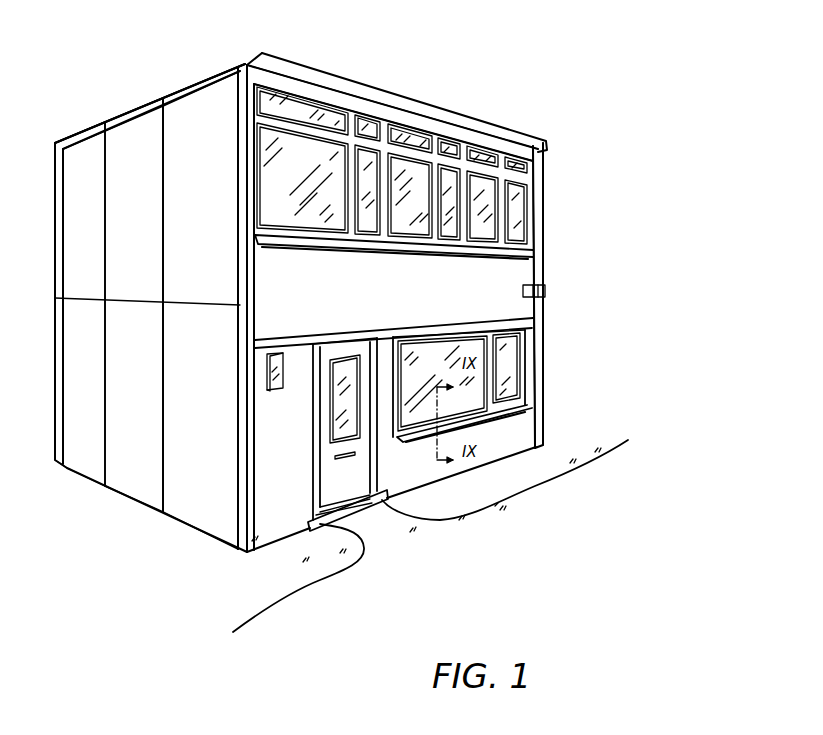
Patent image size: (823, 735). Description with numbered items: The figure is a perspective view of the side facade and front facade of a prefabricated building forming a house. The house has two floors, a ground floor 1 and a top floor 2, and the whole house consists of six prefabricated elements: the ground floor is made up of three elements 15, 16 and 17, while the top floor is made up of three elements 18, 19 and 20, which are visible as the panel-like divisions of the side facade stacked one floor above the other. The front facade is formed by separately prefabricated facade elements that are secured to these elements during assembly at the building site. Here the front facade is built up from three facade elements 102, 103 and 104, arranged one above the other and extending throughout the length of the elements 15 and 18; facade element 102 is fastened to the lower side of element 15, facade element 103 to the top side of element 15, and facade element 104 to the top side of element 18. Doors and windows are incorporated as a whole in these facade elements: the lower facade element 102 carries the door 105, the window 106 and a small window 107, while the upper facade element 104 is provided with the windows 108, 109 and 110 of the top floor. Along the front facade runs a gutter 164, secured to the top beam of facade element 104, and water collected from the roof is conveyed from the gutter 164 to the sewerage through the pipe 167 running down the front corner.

The floor 1 is at (350, 516).
The floor 2 is at (222, 68).
The element 15 is at (213, 538).
The element 16 is at (147, 505).
The element 17 is at (83, 476).
The element 18 is at (178, 88).
The element 19 is at (113, 115).
The element 20 is at (62, 140).
The facade element 102 is at (532, 447).
The facade element 103 is at (256, 327).
The facade element 104 is at (532, 217).
The door 105 is at (327, 483).
The window 106 is at (425, 412).
The small window 107 is at (267, 387).
The window 108 is at (330, 222).
The window 109 is at (412, 228).
The window 110 is at (492, 233).
The gutter 164 is at (415, 103).
The pipe 167 is at (538, 332).